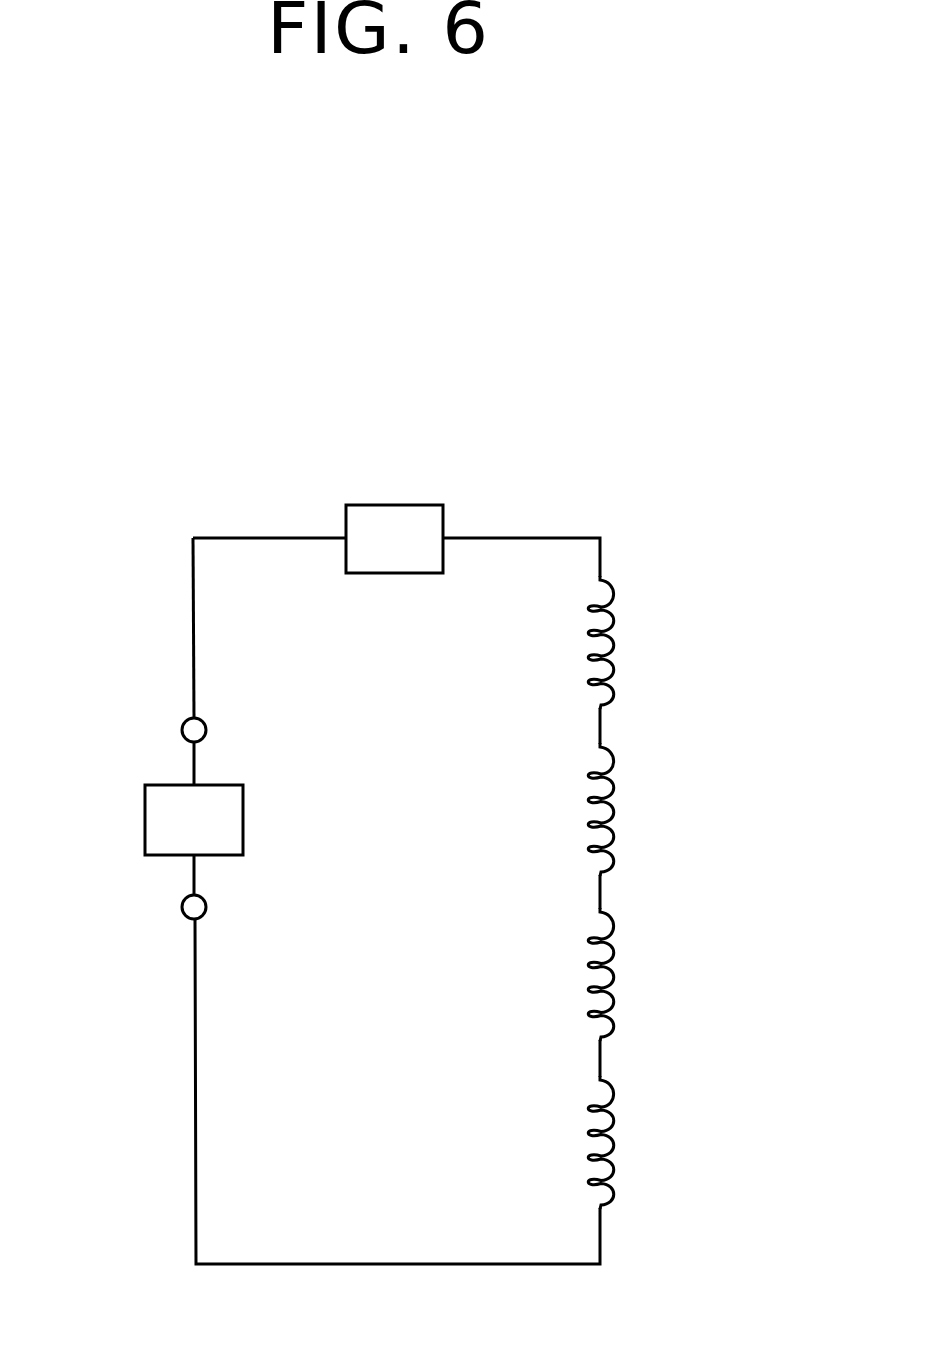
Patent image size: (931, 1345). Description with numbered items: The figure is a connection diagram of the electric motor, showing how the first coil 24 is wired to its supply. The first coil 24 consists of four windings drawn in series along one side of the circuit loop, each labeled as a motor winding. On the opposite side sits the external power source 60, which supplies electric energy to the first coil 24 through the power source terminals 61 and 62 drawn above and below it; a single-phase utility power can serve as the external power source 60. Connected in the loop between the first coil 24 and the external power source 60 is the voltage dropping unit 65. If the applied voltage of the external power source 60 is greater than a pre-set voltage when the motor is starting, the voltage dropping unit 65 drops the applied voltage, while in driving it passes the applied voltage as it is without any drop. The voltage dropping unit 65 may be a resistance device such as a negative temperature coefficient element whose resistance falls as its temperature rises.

The first coil 24 is at (648, 831).
The external power source 60 is at (145, 815).
The power source terminal 61 is at (183, 725).
The power source terminal 62 is at (183, 903).
The voltage dropping unit 65 is at (418, 505).